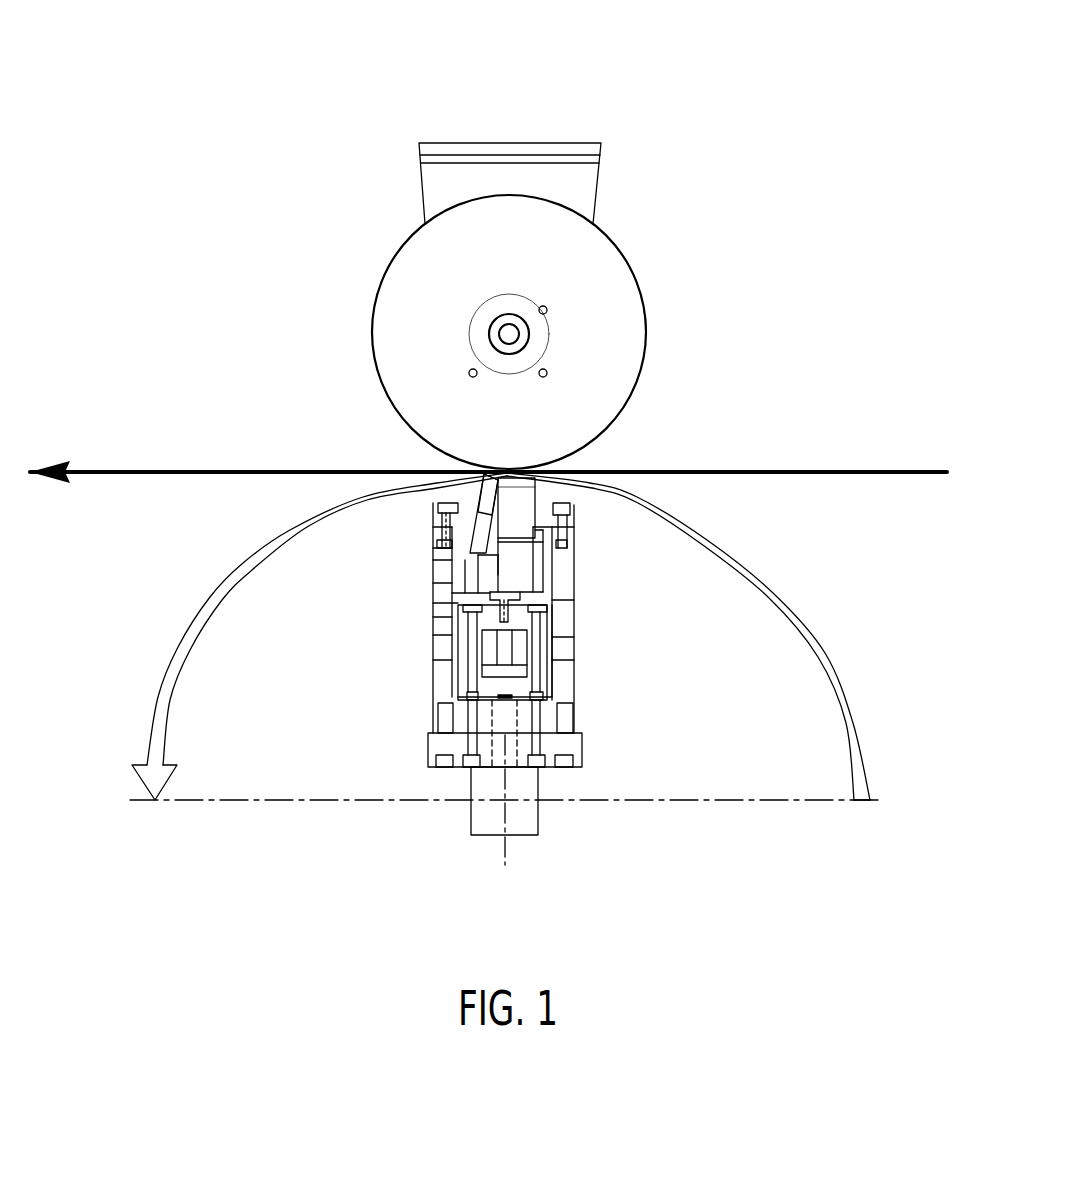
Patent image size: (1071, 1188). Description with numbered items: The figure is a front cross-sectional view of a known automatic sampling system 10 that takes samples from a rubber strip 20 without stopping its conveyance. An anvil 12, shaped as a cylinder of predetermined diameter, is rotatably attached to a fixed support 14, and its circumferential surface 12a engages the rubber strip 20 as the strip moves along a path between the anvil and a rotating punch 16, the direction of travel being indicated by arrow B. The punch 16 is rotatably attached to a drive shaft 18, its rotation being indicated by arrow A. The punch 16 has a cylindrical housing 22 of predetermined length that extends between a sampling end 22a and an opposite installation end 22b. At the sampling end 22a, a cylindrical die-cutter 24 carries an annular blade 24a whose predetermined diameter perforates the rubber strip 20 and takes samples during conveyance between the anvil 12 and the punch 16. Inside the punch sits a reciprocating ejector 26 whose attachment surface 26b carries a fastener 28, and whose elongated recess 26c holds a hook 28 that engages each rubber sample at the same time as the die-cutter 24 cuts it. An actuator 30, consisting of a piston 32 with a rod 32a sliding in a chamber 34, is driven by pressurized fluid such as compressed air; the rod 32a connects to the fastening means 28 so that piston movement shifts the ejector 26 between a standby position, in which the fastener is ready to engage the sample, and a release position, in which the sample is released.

The automatic sampling system 10 is at (247, 108).
The anvil 12 is at (594, 281).
The circumferential surface 12a is at (647, 333).
The fixed support 14 is at (583, 185).
The rotating punch 16 is at (433, 607).
The drive shaft 18 is at (476, 817).
The rubber strip 20 is at (853, 470).
The cylindrical housing 22 is at (575, 600).
The sampling end 22a is at (566, 547).
The installation end 22b is at (573, 720).
The cylindrical die-cutter 24 is at (458, 545).
The annular blade 24a is at (432, 495).
The reciprocating ejector 26 is at (542, 490).
The attachment surface 26b is at (536, 583).
The elongated recess 26c is at (492, 558).
The fastener 28 is at (447, 546).
The actuator 30 is at (462, 655).
The piston 32 is at (545, 674).
The rod 32a is at (513, 647).
The chamber 34 is at (478, 687).